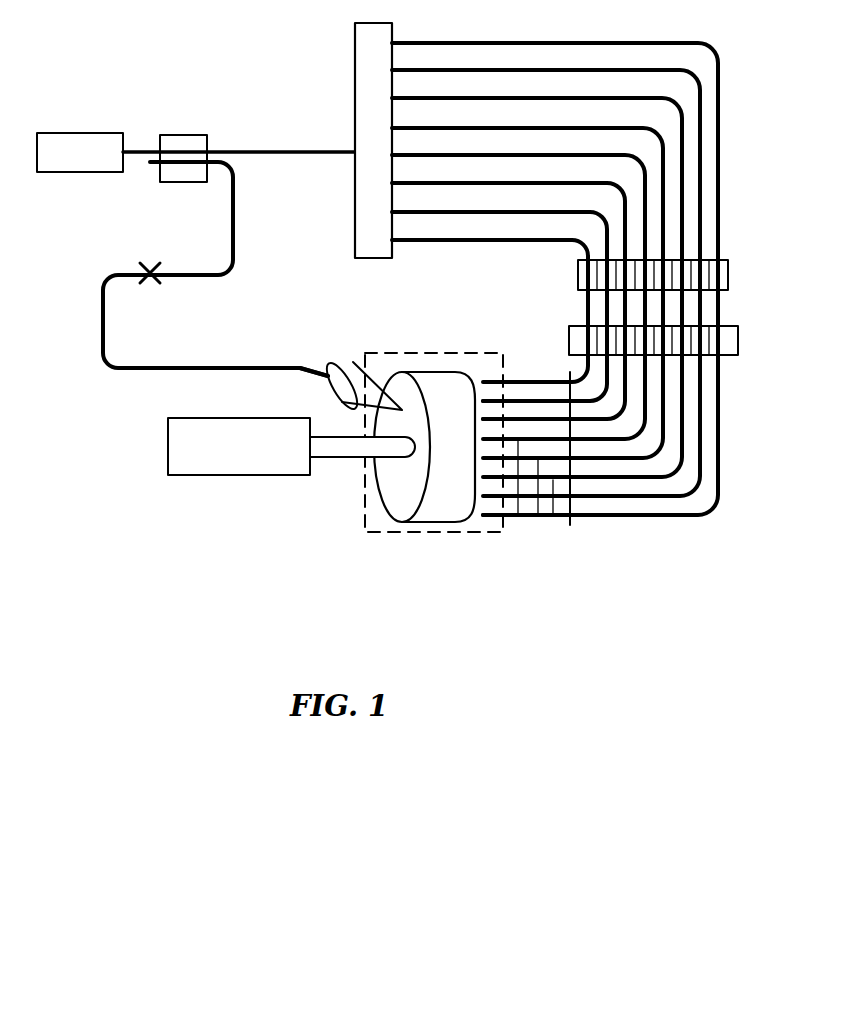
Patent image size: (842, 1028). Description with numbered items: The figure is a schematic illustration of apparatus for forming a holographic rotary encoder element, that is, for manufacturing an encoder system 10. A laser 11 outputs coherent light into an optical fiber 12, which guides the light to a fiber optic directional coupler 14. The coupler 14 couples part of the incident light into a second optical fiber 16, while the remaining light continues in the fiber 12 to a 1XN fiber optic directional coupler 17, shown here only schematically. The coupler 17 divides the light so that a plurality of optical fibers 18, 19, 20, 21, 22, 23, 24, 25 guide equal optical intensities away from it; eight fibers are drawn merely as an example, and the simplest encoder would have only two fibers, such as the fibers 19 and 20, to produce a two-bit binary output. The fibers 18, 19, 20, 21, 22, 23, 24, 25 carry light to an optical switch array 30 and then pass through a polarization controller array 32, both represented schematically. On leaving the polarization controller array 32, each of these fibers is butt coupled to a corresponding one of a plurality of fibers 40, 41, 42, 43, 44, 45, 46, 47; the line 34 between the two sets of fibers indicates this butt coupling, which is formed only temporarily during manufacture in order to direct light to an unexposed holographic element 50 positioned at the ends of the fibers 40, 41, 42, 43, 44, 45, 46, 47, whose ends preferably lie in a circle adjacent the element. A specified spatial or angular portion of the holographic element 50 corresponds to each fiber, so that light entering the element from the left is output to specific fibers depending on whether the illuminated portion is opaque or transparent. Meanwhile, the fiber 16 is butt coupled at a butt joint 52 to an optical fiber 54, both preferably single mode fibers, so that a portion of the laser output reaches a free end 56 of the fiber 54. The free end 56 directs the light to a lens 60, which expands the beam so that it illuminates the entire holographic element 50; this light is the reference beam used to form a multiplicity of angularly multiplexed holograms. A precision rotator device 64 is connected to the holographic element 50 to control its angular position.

The encoder system 10 is at (233, 523).
The laser 11 is at (57, 133).
The optical fiber 12 is at (142, 150).
The fiber optic directional coupler 14 is at (197, 135).
The second optical fiber 16 is at (233, 218).
The 1XN fiber optic directional coupler 17 is at (355, 88).
The optical fiber 18 is at (663, 43).
The optical fiber 19 is at (412, 67).
The optical fiber 20 is at (457, 100).
The optical fiber 21 is at (513, 127).
The optical fiber 22 is at (570, 155).
The optical fiber 23 is at (412, 185).
The optical fiber 24 is at (487, 215).
The optical fiber 25 is at (420, 243).
The optical switch array 30 is at (575, 265).
The polarization controller array 32 is at (577, 323).
The line 34 is at (610, 512).
The optical fiber 40 is at (550, 382).
The optical fiber 41 is at (513, 400).
The optical fiber 42 is at (495, 420).
The optical fiber 43 is at (503, 500).
The optical fiber 44 is at (518, 460).
The optical fiber 45 is at (540, 480).
The optical fiber 46 is at (552, 497).
The optical fiber 47 is at (662, 518).
The holographic element 50 is at (420, 525).
The butt joint 52 is at (152, 272).
The optical fiber 54 is at (105, 293).
The free end 56 is at (305, 376).
The lens 60 is at (343, 367).
The precision rotator device 64 is at (168, 429).